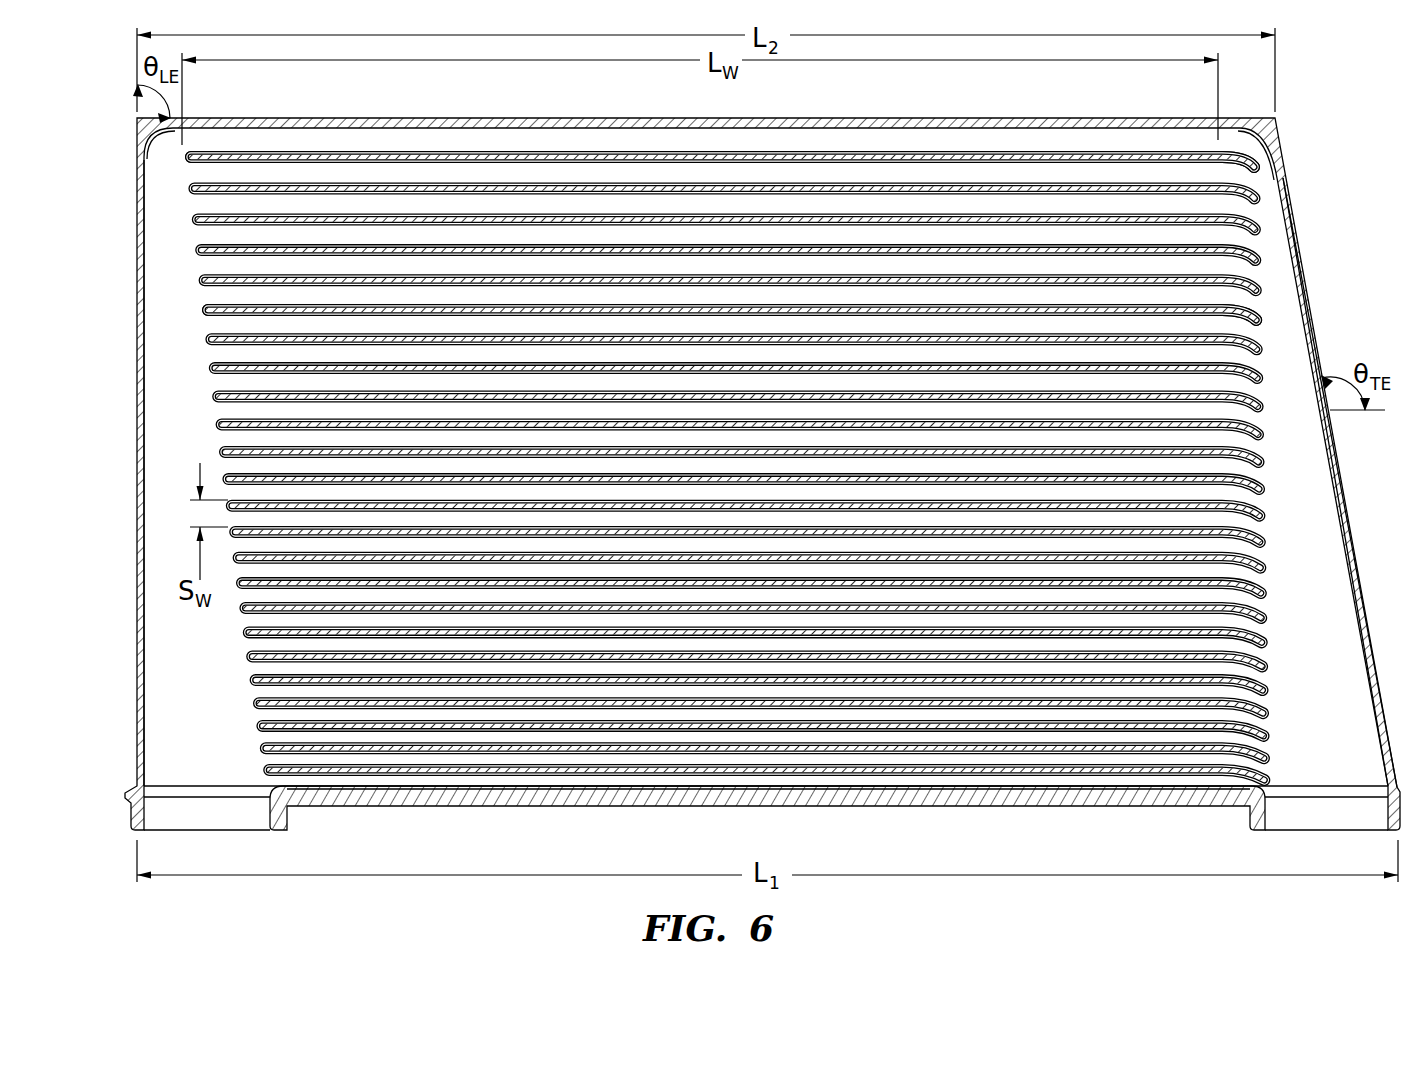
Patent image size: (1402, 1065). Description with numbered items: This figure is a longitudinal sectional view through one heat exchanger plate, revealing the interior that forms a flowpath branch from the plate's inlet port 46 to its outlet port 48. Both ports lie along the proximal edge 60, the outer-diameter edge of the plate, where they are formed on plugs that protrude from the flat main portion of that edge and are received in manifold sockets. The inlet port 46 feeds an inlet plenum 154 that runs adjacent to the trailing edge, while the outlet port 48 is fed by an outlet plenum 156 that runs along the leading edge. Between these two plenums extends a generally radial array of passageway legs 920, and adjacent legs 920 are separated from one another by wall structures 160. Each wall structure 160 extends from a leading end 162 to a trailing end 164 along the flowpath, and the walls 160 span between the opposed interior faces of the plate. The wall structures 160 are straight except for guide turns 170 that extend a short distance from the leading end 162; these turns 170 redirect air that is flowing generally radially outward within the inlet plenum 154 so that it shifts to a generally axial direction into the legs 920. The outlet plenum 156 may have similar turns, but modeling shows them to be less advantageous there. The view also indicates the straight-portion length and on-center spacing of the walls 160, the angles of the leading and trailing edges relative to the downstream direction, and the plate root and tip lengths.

The flowpath leg 920 is at (927, 170).
The wall structure 160 is at (1112, 158).
The trailing end 164 is at (182, 158).
The leading end 162 is at (1291, 200).
The guide turn 170 is at (1260, 308).
The inlet plenum 154 is at (1341, 673).
The outlet plenum 156 is at (229, 705).
The proximal edge 60 is at (1070, 806).
The outlet port 48 is at (213, 840).
The inlet port 46 is at (1324, 835).